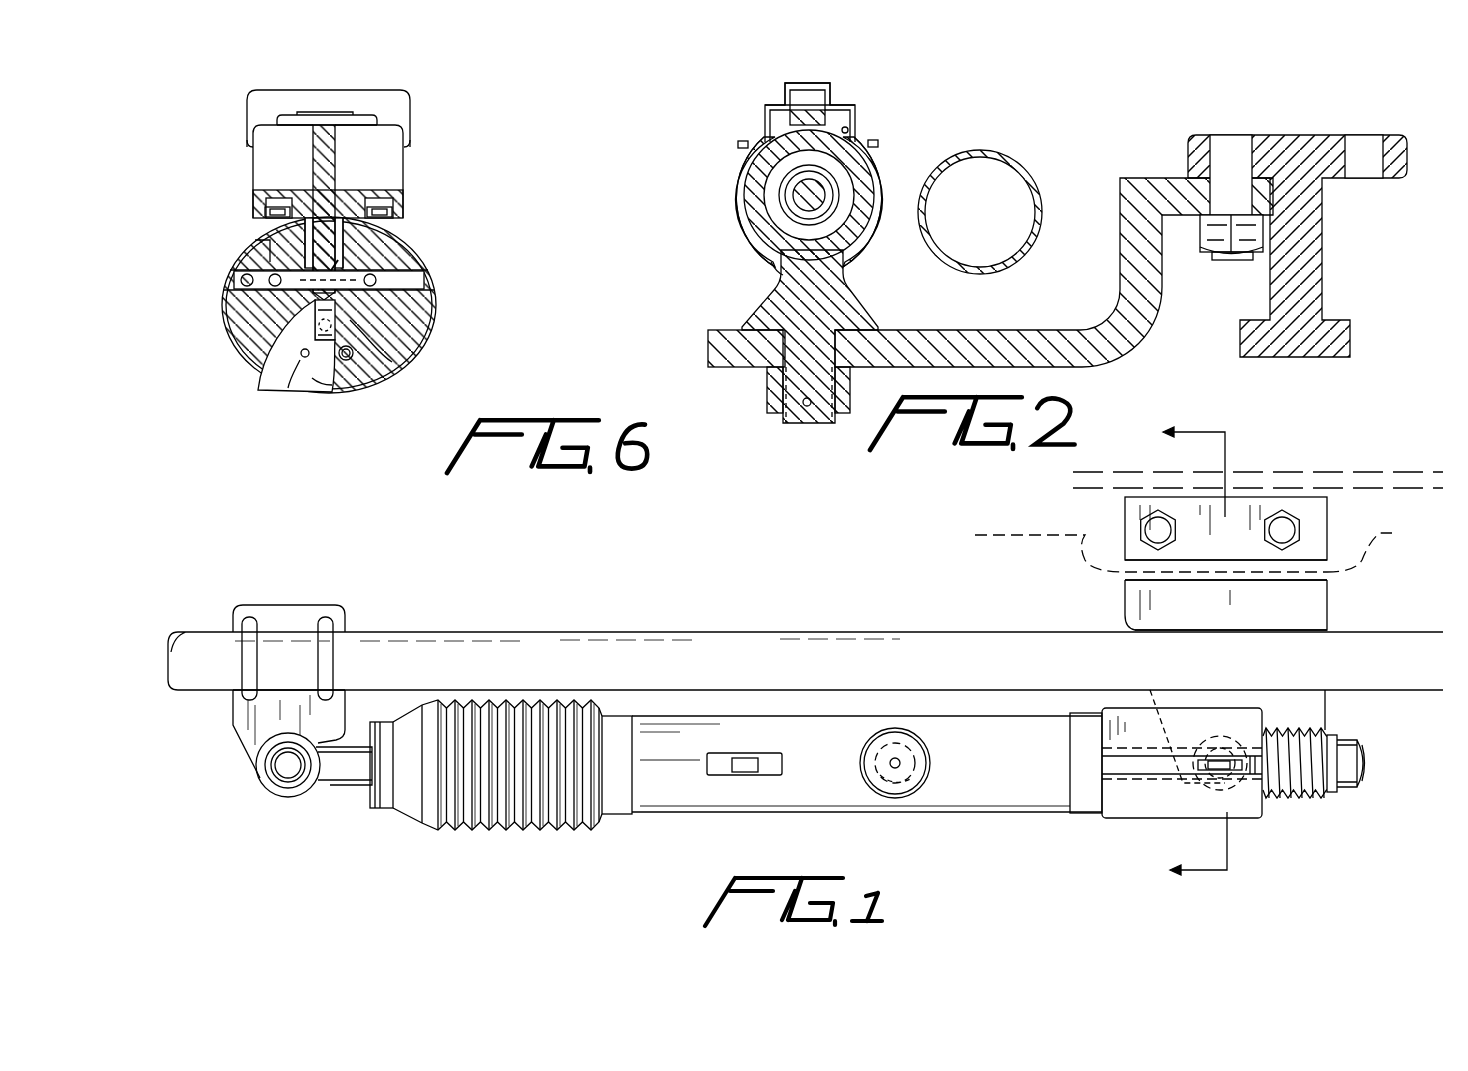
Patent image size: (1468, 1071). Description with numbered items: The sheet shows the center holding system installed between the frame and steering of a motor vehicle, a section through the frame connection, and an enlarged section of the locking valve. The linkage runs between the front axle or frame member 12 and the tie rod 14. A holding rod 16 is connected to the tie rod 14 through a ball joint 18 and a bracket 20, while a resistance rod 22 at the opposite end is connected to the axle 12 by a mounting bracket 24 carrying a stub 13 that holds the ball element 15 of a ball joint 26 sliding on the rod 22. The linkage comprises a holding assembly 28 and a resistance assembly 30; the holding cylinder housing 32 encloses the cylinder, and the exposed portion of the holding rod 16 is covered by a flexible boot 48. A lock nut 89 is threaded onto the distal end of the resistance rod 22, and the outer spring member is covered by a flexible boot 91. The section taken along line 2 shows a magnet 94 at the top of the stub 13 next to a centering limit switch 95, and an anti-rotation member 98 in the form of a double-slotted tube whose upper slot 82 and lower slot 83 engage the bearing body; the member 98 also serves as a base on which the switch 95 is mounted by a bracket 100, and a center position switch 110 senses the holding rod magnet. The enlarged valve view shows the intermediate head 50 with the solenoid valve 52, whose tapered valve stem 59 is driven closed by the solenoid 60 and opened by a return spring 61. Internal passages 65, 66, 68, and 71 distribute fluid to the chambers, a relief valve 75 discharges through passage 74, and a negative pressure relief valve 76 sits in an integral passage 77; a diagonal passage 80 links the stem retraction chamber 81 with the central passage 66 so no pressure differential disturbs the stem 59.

In FIG. 1, the section line 2- 2 is at (1194, 655).
In FIG. 2, the front axle or frame member 12 is at (1322, 215).
In FIG. 1, the front axle or frame member 12 is at (1085, 535).
In FIG. 2, the stub 13 is at (867, 292).
In FIG. 2, the tie rod 14 is at (1018, 163).
In FIG. 1, the tie rod 14 is at (513, 645).
In FIG. 2, the ball element 15 is at (850, 187).
In FIG. 1, the holding rod 16 is at (350, 786).
In FIG. 1, the ball joint 18 is at (290, 798).
In FIG. 1, the bracket 20 is at (291, 615).
In FIG. 1, the resistance rod 22 is at (1367, 763).
In FIG. 1, the mounting bracket 24 is at (1145, 595).
In FIG. 2, the ball joint 26 is at (753, 213).
In FIG. 1, the ball joint 26 is at (1228, 794).
In FIG. 1, the holding assembly 28 is at (742, 826).
In FIG. 1, the resistance assembly 30 is at (1120, 843).
In FIG. 1, the holding cylinder housing 32 is at (955, 795).
In FIG. 1, the flexible boot 48 is at (502, 833).
In FIG. 6, the intermediate head 50 is at (412, 327).
In FIG. 6, the solenoid valve 52 is at (438, 134).
In FIG. 1, the solenoid valve 52 is at (858, 790).
In FIG. 6, the valve stem 59 is at (410, 293).
In FIG. 1, the valve stem 59 is at (903, 768).
In FIG. 6, the solenoid 60 is at (405, 167).
In FIG. 6, the return spring 61 is at (392, 362).
In FIG. 6, the internal passage 65 is at (293, 283).
In FIG. 6, the central passage 66 is at (307, 330).
In FIG. 6, the internal passage 68 is at (255, 255).
In FIG. 6, the internal passage 71 is at (430, 288).
In FIG. 6, the relief valve passage 74 is at (347, 358).
In FIG. 6, the relief valve 75 is at (350, 362).
In FIG. 6, the negative pressure relief valve 76 is at (322, 392).
In FIG. 6, the integral passage 77 is at (310, 368).
In FIG. 6, the diagonal passage 80 is at (320, 292).
In FIG. 6, the stem retraction chamber 81 is at (342, 200).
In FIG. 2, the upper slot 82 is at (855, 116).
In FIG. 1, the upper slot 82 is at (1152, 768).
In FIG. 2, the lower slot 83 is at (783, 273).
In FIG. 1, the lock nut 89 is at (1350, 790).
In FIG. 1, the flexible boot 91 is at (1320, 800).
In FIG. 2, the magnet 94 is at (760, 118).
In FIG. 1, the magnet 94 is at (1237, 753).
In FIG. 6, the centering limit switch 95 is at (232, 275).
In FIG. 2, the centering limit switch 95 is at (802, 93).
In FIG. 1, the centering limit switch 95 is at (1205, 762).
In FIG. 2, the anti-rotation member 98 is at (728, 170).
In FIG. 1, the anti-rotation member 98 is at (1120, 723).
In FIG. 6, the bracket 100 is at (410, 96).
In FIG. 2, the bracket 100 is at (845, 103).
In FIG. 1, the bracket 100 is at (919, 735).
In FIG. 1, the center position switch 110 is at (748, 760).